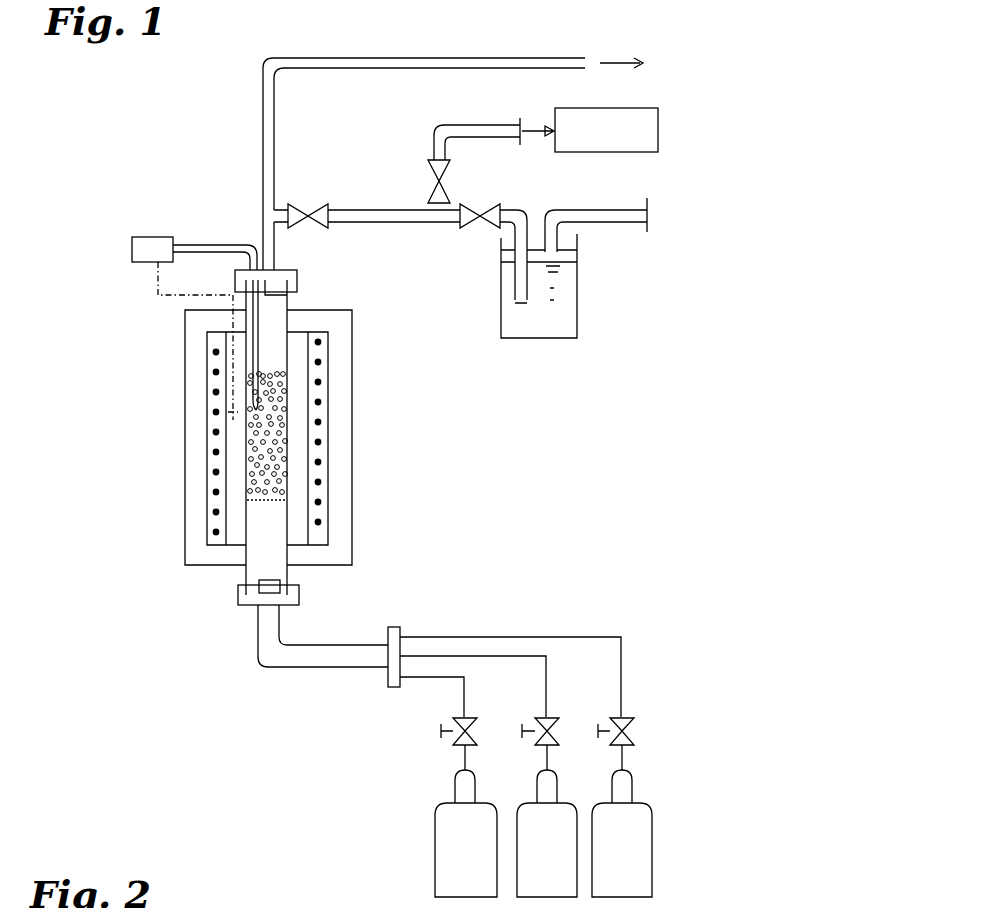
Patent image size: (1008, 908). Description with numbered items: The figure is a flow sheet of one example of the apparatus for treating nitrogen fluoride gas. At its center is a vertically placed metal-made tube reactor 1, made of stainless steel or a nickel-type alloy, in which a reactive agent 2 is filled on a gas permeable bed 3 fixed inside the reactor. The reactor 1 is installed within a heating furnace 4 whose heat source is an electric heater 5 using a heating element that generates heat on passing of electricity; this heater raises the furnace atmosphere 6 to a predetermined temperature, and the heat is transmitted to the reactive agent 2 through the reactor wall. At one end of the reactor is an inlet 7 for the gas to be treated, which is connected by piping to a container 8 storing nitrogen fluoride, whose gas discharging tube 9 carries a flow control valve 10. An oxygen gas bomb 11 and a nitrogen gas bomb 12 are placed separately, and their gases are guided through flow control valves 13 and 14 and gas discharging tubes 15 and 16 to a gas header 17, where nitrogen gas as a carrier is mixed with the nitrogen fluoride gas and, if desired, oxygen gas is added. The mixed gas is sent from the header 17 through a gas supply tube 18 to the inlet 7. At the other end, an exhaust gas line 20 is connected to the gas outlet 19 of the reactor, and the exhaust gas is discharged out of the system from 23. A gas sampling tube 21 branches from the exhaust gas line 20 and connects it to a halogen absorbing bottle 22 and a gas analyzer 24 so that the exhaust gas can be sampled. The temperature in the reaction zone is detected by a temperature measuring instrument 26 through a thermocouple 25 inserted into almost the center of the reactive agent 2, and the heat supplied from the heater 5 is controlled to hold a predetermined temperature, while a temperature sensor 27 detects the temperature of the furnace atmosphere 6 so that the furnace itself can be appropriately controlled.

The reactor 1 is at (287, 523).
The reactive agent 2 is at (270, 465).
The gas permeable bed 3 is at (272, 503).
The heating furnace 4 is at (197, 478).
The electric heater 5 is at (215, 452).
The furnace atmosphere 6 is at (237, 503).
The inlet for gas to be treated 7 is at (276, 575).
The container storing nitrogen fluoride 8 is at (566, 802).
The gas discharging tube 9 is at (549, 680).
The flow control valve 10 is at (521, 731).
The oxygen gas bomb 11 is at (486, 802).
The nitrogen gas bomb 12 is at (648, 802).
The flow control valve 13 is at (440, 731).
The flow control valve 14 is at (597, 731).
The gas discharging tube 15 is at (467, 692).
The gas discharging tube 16 is at (624, 680).
The gas header 17 is at (385, 630).
The gas supply tube 18 is at (305, 645).
The gas outlet 19 is at (272, 293).
The exhaust gas line 20 is at (275, 153).
The gas sampling tube 21 is at (420, 224).
The halogen absorbing bottle 22 is at (578, 318).
The discharge to outside the system 23 is at (547, 53).
The gas analyzer 24 is at (667, 128).
The thermocouple 25 is at (262, 413).
The temperature measuring instrument 26 is at (132, 245).
The temperature sensor 27 is at (230, 417).